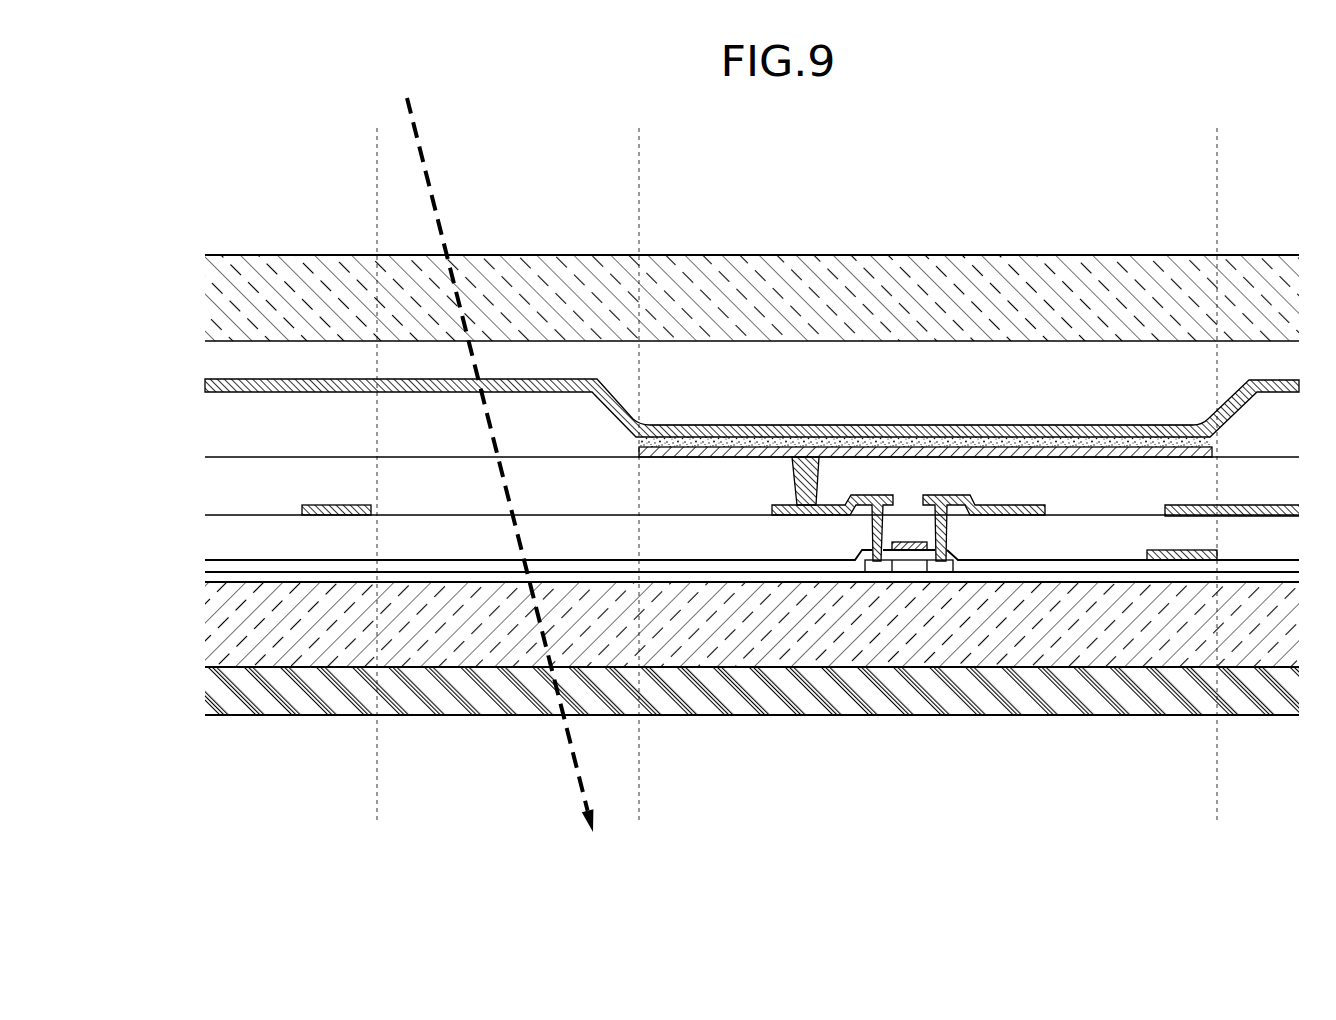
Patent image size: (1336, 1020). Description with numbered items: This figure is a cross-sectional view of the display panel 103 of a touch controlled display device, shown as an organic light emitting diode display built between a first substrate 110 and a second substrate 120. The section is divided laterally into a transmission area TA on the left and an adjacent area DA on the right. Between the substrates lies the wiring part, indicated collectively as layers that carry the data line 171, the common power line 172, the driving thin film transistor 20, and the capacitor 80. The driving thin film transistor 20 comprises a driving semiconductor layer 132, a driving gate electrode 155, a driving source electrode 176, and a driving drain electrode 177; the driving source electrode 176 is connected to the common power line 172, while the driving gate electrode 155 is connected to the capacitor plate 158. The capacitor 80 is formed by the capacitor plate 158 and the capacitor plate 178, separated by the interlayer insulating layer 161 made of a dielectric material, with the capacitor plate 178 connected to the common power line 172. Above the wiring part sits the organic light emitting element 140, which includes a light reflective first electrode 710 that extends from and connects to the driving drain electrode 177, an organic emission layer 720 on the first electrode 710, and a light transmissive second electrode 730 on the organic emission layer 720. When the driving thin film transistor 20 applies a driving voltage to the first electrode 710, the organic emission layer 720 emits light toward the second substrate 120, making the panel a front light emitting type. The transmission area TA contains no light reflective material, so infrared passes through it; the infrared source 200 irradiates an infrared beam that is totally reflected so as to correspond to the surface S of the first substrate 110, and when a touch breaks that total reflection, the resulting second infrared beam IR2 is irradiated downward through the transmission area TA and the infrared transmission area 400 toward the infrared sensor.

The display panel 103 is at (311, 196).
The surface of the first substrate S is at (255, 255).
The transmission area TA is at (639, 141).
The display area DA is at (1217, 141).
The second substrate 120 is at (915, 270).
The organic light emitting element 140 is at (925, 327).
The first electrode 710 is at (706, 450).
The organic emission layer 720 is at (759, 440).
The second electrode 730 is at (809, 428).
The common power line 172 is at (1262, 500).
The capacitor 80 is at (1207, 357).
The capacitor plate 158 is at (1150, 551).
The capacitor plate 178 is at (1192, 506).
The infrared source 200 is at (200, 470).
The data line 171 is at (343, 515).
The interlayer insulating layer 161 is at (1087, 540).
The driving thin film transistor 20 is at (908, 657).
The driving drain electrode 177 is at (812, 515).
The driving source electrode 176 is at (1010, 515).
The driving gate electrode 155 is at (917, 549).
The driving semiconductor layer 132 is at (902, 567).
The first substrate 110 is at (700, 655).
The infrared transmission area 400 is at (1160, 700).
The second infrared beam IR2 is at (577, 771).